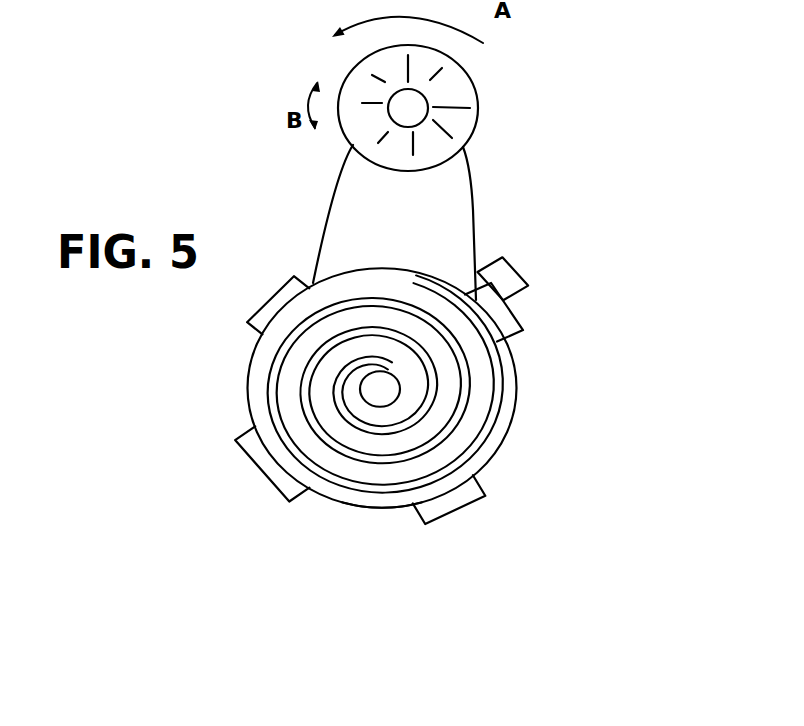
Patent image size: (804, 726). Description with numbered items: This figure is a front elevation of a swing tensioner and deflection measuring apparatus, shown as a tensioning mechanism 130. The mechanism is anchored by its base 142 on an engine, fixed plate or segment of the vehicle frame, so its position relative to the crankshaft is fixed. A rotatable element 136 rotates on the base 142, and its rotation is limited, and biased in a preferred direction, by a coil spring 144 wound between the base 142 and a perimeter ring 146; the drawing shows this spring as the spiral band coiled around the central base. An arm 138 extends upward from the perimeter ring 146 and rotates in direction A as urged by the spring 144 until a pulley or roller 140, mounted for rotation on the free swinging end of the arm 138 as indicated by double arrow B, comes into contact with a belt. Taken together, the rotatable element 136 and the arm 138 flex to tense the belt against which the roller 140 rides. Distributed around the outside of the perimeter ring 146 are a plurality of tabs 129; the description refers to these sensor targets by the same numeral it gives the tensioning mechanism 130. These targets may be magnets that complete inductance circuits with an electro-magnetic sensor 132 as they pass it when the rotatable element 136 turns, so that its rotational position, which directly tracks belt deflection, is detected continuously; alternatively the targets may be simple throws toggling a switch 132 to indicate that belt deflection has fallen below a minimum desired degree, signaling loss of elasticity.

The mounting tabs 129 is at (258, 302).
The tensioning mechanism 130 is at (400, 383).
The electro-magnetic sensor 132 is at (508, 277).
The rotatable element 136 is at (247, 393).
The arm 138 is at (453, 196).
The pulley or roller 140 is at (463, 90).
The base 142 is at (402, 394).
The coil spring 144 is at (503, 443).
The perimeter ring 146 is at (365, 507).